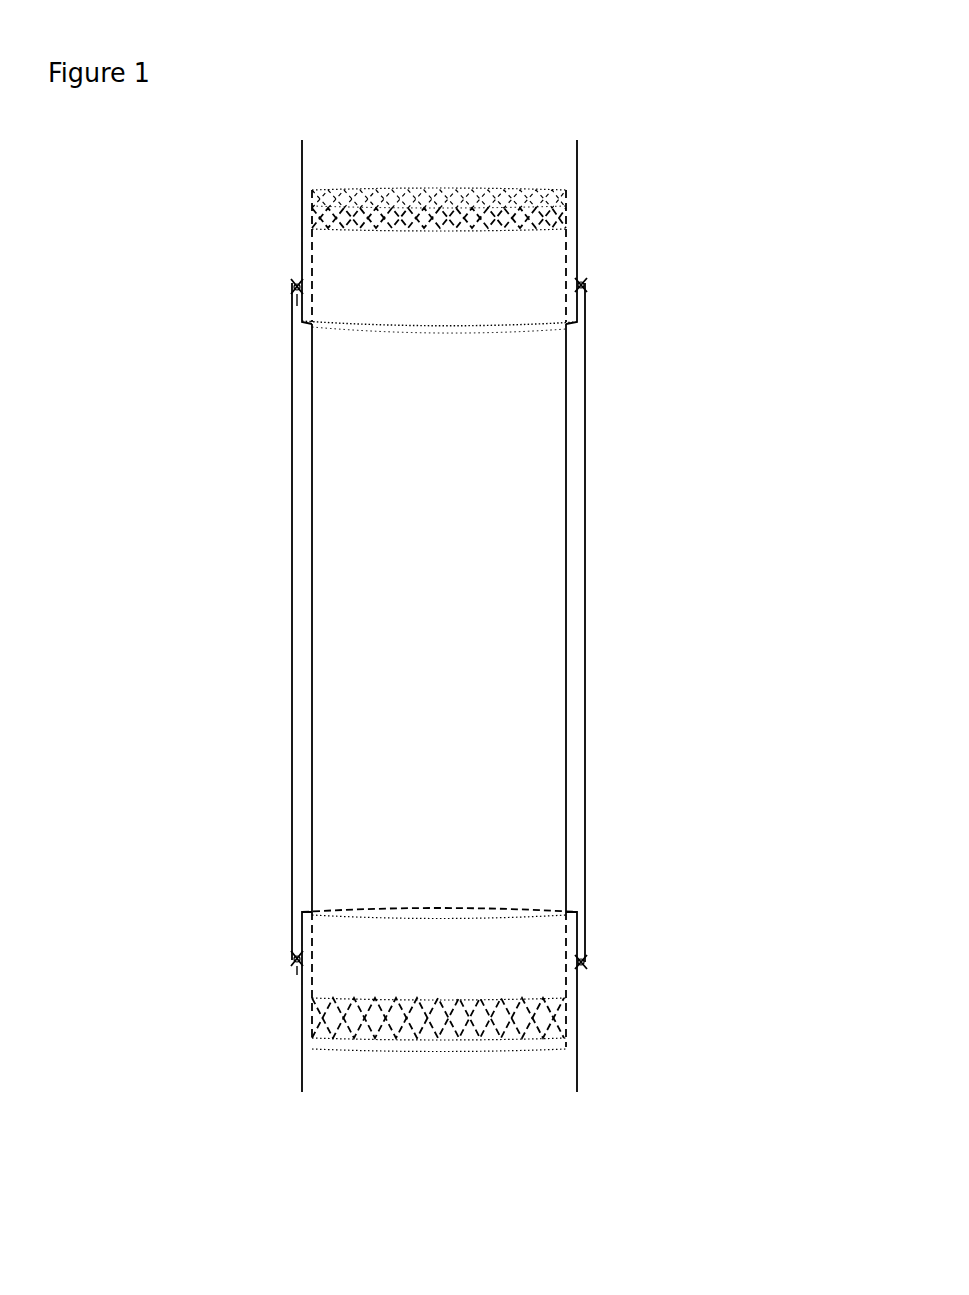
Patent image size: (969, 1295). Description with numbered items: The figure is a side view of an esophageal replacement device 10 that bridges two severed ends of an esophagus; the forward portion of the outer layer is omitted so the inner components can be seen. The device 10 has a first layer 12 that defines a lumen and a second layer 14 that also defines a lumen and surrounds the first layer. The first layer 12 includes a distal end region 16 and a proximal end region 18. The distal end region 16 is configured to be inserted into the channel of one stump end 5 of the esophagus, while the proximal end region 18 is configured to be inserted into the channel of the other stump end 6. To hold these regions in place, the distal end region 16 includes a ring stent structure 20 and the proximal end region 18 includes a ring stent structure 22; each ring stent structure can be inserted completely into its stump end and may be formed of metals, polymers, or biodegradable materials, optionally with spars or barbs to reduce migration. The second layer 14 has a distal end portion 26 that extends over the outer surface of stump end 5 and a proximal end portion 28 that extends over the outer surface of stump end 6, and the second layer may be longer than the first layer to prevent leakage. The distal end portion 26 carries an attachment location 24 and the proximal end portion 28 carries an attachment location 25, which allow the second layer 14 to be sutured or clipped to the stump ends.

The device 10 is at (747, 82).
The stump end 5 is at (577, 1087).
The stump end 6 is at (577, 181).
The first layer 12 is at (567, 391).
The second layer 14 is at (585, 470).
The distal end region 16 is at (483, 1055).
The proximal end region 18 is at (456, 188).
The ring stent structure 20 is at (566, 1023).
The ring stent structure 22 is at (566, 204).
The attachment location 24 is at (296, 954).
The attachment location 25 is at (296, 283).
The distal end portion 26 is at (295, 967).
The proximal end portion 28 is at (295, 306).